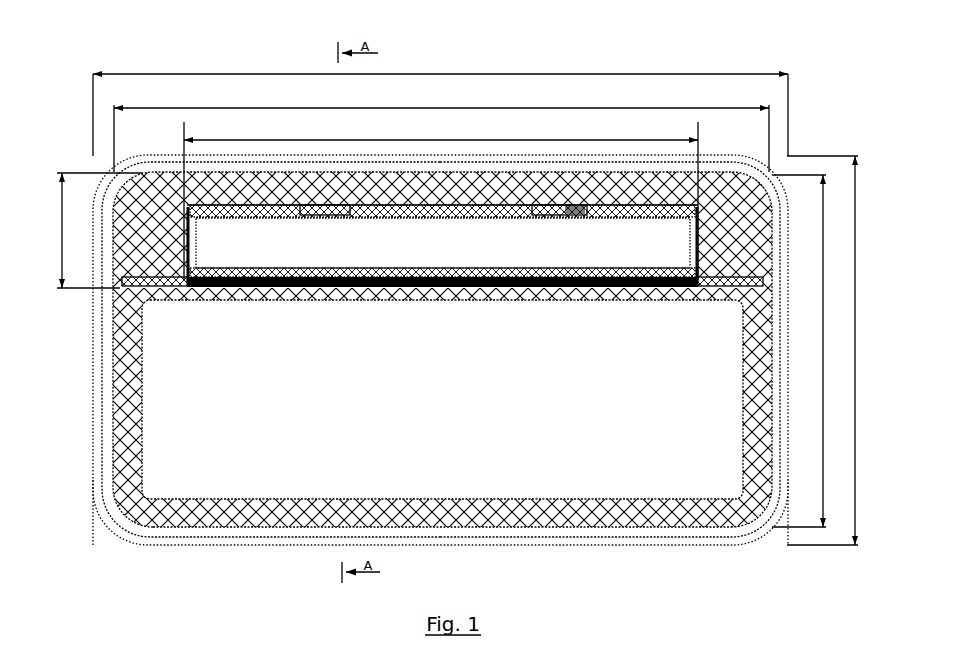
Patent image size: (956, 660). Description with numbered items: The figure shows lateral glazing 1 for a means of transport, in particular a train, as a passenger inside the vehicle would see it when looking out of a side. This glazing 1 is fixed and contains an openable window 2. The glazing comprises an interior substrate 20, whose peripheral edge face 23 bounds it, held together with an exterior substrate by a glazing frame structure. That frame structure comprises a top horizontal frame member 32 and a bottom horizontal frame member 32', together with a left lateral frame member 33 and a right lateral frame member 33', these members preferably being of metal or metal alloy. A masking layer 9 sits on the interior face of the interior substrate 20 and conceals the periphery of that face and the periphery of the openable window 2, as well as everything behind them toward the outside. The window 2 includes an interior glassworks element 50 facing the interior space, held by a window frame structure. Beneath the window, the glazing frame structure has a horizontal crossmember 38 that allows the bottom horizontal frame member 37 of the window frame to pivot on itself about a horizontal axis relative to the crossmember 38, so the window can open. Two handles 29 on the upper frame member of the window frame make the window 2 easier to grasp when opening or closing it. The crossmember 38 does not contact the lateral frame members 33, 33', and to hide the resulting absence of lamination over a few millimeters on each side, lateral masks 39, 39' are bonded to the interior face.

The lateral glazing 1 is at (188, 61).
The openable window 2 is at (205, 225).
The masking layer 9 is at (267, 513).
The interior substrate 20 is at (404, 420).
The peripheral edge face 23 is at (485, 527).
The handles 29 is at (572, 218).
The top horizontal frame member 32 is at (440, 313).
The bottom horizontal frame member 32' is at (440, 536).
The left lateral frame member 33 is at (231, 349).
The right lateral frame member 33' is at (649, 350).
The bottom horizontal frame member of the window frame 37 is at (300, 275).
The horizontal crossmember 38 is at (470, 288).
The lateral mask 39 is at (167, 311).
The lateral mask 39' is at (714, 310).
The interior glassworks element 50 is at (402, 255).